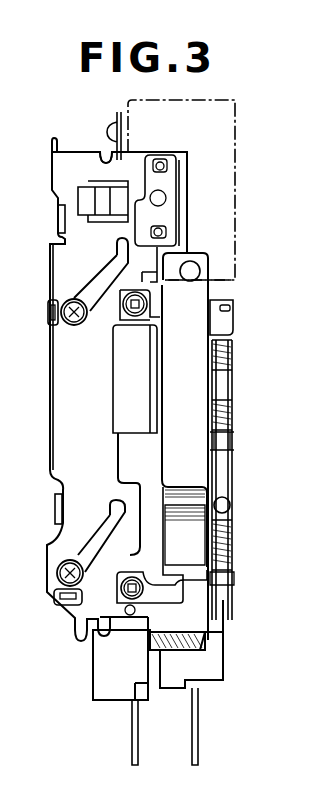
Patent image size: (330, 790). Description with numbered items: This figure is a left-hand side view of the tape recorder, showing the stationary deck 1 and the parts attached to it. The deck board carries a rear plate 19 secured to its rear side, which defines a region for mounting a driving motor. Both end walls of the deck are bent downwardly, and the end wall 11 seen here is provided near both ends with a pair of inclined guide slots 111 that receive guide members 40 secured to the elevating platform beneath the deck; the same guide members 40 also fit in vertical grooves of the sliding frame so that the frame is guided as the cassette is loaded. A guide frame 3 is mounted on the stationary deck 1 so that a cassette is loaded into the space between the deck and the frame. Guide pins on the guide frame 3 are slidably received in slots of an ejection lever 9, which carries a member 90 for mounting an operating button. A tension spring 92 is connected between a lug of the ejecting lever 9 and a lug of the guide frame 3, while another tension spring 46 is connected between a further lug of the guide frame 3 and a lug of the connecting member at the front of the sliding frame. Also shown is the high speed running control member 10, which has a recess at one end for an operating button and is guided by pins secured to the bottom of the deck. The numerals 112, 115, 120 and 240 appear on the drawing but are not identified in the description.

The stationary deck 1 is at (42, 431).
The guide frame 3 is at (218, 294).
The ejection lever 9 is at (207, 685).
The high speed running control member 10 is at (125, 748).
The end wall 11 is at (54, 392).
The rear plate 19 is at (72, 152).
The guide member 40 is at (75, 326).
The tension spring 46 is at (233, 372).
The member for mounting an operating button 90 is at (199, 706).
The tension spring 92 is at (233, 522).
The inclined guide slot 111 is at (117, 250).
The side tab 112 is at (58, 213).
The mounting plate 115 is at (152, 213).
The housing (phantom) 120 is at (237, 132).
The nut 240 is at (52, 298).